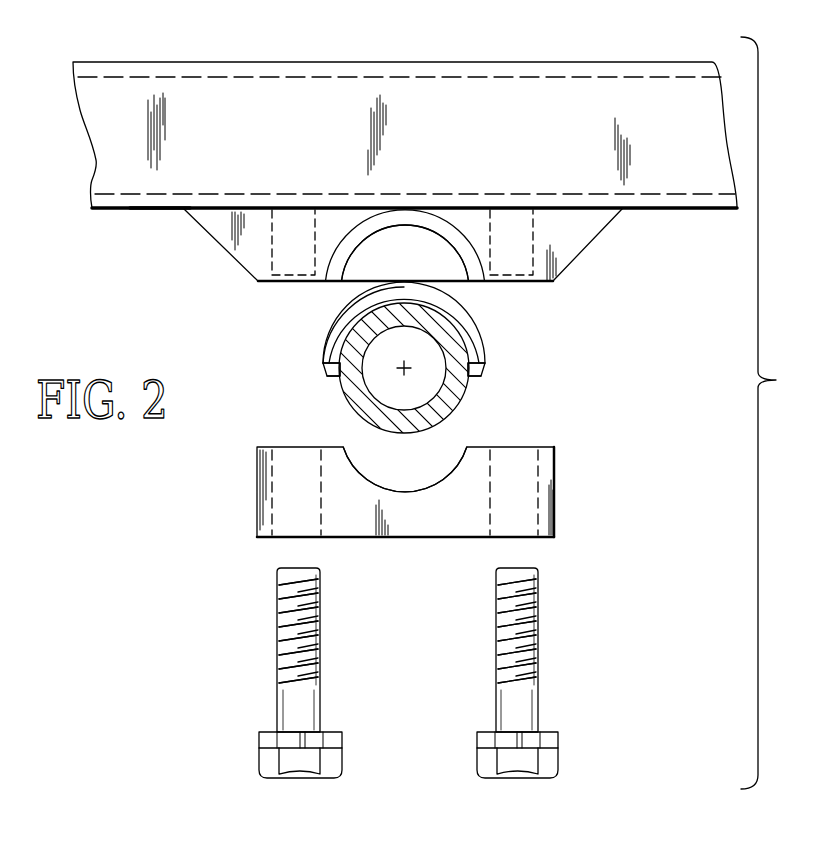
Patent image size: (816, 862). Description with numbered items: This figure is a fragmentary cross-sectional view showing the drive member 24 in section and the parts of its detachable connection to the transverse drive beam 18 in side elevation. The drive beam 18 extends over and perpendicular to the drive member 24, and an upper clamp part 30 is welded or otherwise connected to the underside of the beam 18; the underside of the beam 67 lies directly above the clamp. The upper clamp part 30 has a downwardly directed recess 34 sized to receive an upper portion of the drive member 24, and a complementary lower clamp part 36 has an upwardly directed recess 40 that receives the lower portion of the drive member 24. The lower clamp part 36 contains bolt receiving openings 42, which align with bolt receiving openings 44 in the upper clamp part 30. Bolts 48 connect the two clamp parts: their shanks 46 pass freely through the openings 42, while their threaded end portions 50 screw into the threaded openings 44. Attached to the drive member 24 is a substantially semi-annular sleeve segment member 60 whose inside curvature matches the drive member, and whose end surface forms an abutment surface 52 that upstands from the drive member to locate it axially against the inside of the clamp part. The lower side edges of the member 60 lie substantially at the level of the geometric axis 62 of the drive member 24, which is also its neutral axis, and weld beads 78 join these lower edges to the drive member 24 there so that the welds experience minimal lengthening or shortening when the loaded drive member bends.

The transverse drive beam 18 is at (476, 60).
The lower surface of frame member 67 is at (158, 176).
The upper clamp part 30 is at (600, 226).
The downwardly directed recess 34 is at (430, 247).
The bolt receiving openings 44 is at (283, 250).
The abutment surface 52 is at (356, 316).
The sleeve segment member 60 is at (320, 338).
The weld beads 78 is at (329, 376).
The drive member 24 is at (470, 393).
The geometric axis 62 is at (401, 371).
The lower clamp part 36 is at (551, 483).
The upwardly directed recess 40 is at (422, 474).
The bolt receiving openings 42 is at (281, 503).
The shank 46 is at (284, 705).
The bolt 48 is at (269, 649).
The threaded end portion 50 is at (322, 612).